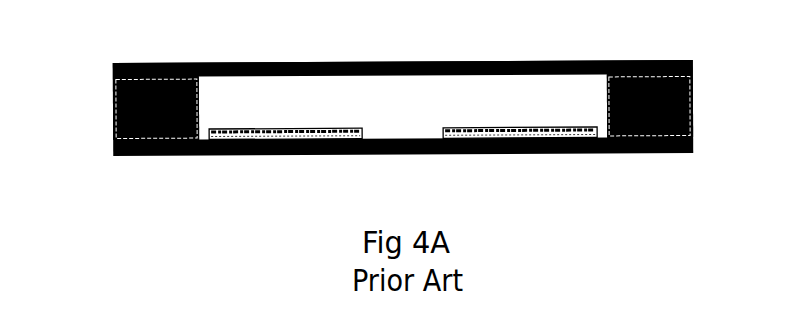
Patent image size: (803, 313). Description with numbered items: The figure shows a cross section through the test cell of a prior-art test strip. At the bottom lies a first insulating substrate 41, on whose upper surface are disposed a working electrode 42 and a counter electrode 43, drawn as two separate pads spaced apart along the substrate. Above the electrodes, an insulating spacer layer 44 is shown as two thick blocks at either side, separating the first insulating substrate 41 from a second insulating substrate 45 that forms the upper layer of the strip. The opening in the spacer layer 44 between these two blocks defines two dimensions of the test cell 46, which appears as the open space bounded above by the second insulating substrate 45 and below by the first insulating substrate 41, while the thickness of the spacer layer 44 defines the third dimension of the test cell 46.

The first insulating substrate 41 is at (686, 145).
The working electrode 42 is at (318, 138).
The counter electrode 43 is at (497, 138).
The insulating spacer layer 44 is at (119, 103).
The second insulating substrate 45 is at (686, 67).
The test cell 46 is at (403, 106).